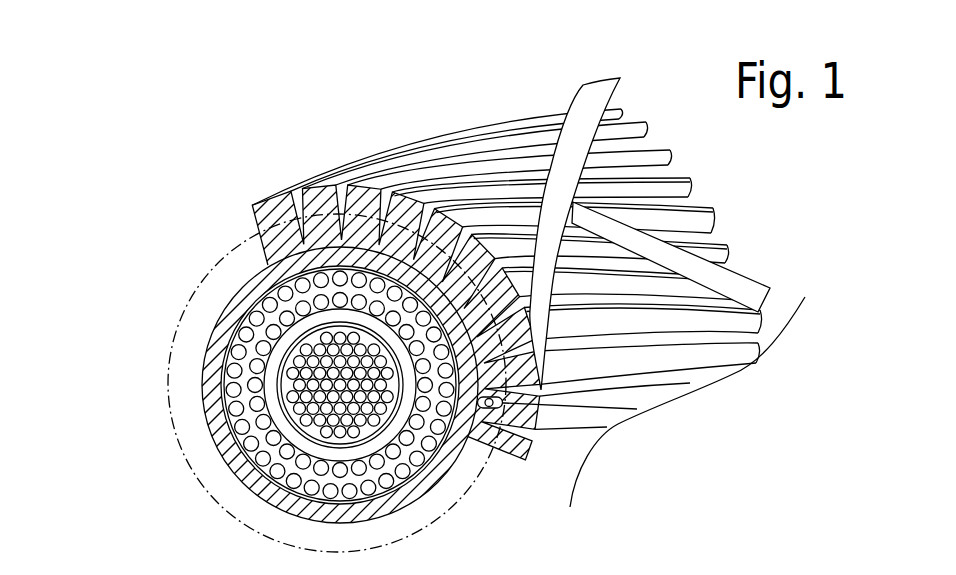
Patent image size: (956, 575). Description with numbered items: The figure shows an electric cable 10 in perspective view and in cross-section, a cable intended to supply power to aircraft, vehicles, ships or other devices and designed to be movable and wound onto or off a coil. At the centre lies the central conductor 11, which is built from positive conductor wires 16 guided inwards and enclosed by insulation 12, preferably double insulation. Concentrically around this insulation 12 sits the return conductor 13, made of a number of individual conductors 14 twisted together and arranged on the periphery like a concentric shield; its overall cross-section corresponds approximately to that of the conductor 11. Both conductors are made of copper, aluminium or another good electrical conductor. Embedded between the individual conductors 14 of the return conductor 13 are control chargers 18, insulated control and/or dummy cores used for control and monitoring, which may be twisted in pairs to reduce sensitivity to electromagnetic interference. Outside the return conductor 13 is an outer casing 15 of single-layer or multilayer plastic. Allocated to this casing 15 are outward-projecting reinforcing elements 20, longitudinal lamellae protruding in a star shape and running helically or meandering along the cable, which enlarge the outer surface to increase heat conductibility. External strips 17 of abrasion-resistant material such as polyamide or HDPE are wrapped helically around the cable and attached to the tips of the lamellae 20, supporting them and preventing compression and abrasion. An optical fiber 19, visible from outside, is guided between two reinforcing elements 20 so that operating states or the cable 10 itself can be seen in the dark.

The electric cable 10 is at (297, 133).
The central conductor 11 is at (345, 326).
The insulation 12 is at (258, 292).
The return conductor 13 is at (217, 349).
The individual conductors 14 is at (228, 380).
The outer casing 15 is at (445, 490).
The conductor wires 16 is at (222, 350).
The external strips 17 is at (560, 150).
The control chargers 18 is at (330, 470).
The optical fiber 19 is at (497, 404).
The reinforcing elements 20 is at (255, 203).